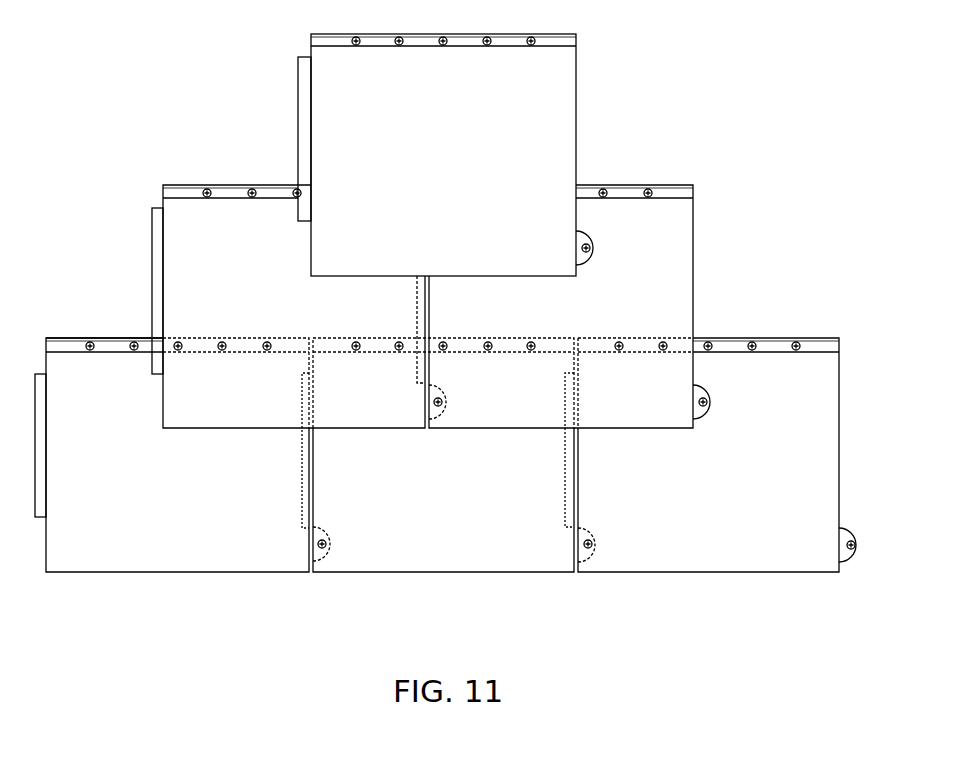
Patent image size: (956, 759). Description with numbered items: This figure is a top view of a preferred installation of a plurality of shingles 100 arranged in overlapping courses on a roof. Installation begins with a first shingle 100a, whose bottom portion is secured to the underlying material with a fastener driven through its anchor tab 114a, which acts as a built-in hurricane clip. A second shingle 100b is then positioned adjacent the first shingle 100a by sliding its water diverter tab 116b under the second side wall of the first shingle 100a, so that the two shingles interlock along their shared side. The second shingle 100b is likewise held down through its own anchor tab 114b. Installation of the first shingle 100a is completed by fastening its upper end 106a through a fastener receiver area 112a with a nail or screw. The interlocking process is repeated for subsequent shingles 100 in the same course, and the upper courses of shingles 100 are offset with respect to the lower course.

The shingle 100 is at (562, 117).
The first shingle 100a is at (162, 523).
The second shingle 100b is at (520, 531).
The upper end of the first shingle 106a is at (122, 332).
The fastener receiver area 112a is at (90, 342).
The anchor tab of the first shingle 114a is at (323, 548).
The anchor tab of the second shingle 114b is at (589, 547).
The water diverter tab of the second shingle 116b is at (300, 486).